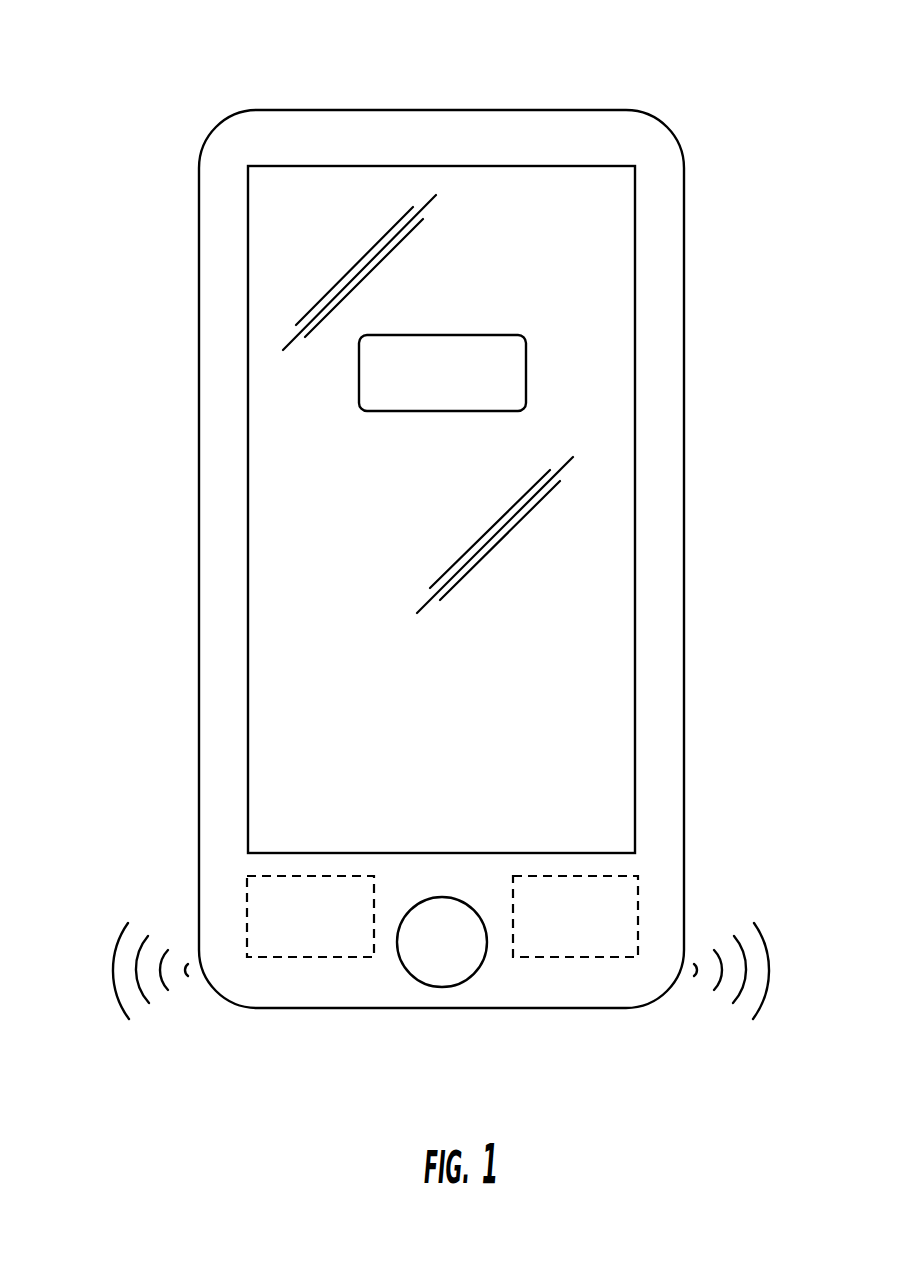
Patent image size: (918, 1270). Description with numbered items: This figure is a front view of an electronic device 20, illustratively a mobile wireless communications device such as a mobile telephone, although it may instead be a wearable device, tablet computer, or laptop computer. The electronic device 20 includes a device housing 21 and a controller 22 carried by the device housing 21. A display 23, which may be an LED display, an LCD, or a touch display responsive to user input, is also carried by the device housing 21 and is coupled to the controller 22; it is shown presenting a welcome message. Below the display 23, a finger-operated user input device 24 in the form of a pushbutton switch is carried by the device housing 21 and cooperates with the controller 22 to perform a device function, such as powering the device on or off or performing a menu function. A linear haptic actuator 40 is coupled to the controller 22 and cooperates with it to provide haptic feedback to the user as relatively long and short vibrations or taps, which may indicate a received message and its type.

The electronic device 20 is at (417, 532).
The device housing 21 is at (199, 251).
The controller 22 is at (352, 957).
The display 23 is at (248, 433).
The finger-operated user input device 24 is at (442, 987).
The haptic actuator 40 is at (533, 957).